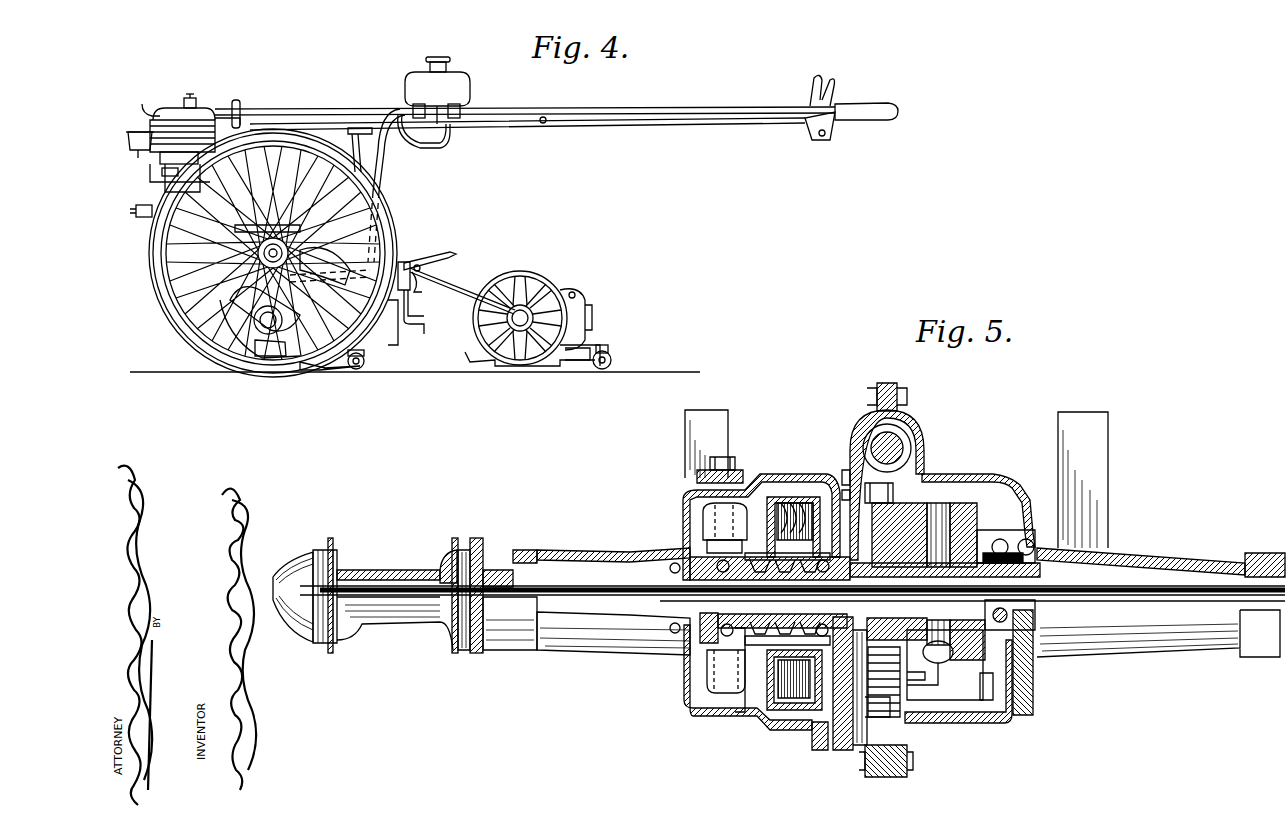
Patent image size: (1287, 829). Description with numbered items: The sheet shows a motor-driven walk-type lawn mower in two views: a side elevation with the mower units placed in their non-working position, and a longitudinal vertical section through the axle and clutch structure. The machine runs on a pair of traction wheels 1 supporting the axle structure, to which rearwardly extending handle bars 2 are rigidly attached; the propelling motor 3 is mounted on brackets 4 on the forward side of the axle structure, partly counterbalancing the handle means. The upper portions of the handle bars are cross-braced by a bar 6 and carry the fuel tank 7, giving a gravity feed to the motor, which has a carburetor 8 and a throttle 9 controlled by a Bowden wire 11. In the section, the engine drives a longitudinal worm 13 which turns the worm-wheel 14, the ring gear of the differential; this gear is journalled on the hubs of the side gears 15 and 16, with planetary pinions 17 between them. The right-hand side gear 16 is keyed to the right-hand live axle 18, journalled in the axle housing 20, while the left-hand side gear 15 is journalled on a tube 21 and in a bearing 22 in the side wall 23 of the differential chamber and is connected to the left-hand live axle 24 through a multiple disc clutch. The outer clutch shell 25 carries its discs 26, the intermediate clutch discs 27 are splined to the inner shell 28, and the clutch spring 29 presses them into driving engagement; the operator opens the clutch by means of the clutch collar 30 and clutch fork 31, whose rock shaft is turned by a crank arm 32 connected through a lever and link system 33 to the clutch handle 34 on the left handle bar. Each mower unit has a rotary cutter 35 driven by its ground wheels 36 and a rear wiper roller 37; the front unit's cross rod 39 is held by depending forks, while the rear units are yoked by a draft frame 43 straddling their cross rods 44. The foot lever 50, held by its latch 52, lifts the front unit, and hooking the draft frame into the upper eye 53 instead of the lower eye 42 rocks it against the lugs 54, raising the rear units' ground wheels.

In FIG. 4, the traction wheels 1 is at (390, 225).
In FIG. 4, the handle bars 2 is at (660, 106).
In FIG. 4, the propelling motor 3 is at (195, 117).
In FIG. 5, the brackets 4 is at (678, 410).
In FIG. 4, the cross-brace bar 6 is at (545, 116).
In FIG. 4, the fuel tank 7 is at (465, 84).
In FIG. 4, the carburetor 8 is at (131, 145).
In FIG. 4, the throttle 9 is at (146, 100).
In FIG. 4, the Bowden wire 11 is at (316, 106).
In FIG. 5, the worm 13 is at (876, 438).
In FIG. 5, the worm-wheel 14 is at (912, 505).
In FIG. 5, the left-hand side gear 15 is at (945, 508).
In FIG. 5, the right-hand side gear 16 is at (1003, 540).
In FIG. 5, the planetary pinions 17 is at (975, 530).
In FIG. 5, the right-hand live axle 18 is at (1125, 586).
In FIG. 5, the axle housing 20 is at (550, 550).
In FIG. 5, the tube 21 is at (818, 745).
In FIG. 5, the bearing 22 is at (797, 710).
In FIG. 5, the side wall 23 is at (818, 497).
In FIG. 5, the left-hand live axle 24 is at (585, 548).
In FIG. 5, the outer clutch shell 25 is at (800, 497).
In FIG. 5, the clutch discs 26 is at (715, 458).
In FIG. 5, the intermediate clutch discs 27 is at (762, 722).
In FIG. 5, the inner shell 28 is at (708, 660).
In FIG. 5, the clutch spring 29 is at (712, 636).
In FIG. 5, the clutch collar 30 is at (705, 620).
In FIG. 5, the clutch fork 31 is at (710, 525).
In FIG. 5, the crank arm 32 is at (700, 476).
In FIG. 4, the lever and link system 33 is at (462, 138).
In FIG. 4, the clutch handle 34 is at (830, 84).
In FIG. 4, the rotary cutter 35 is at (305, 378).
In FIG. 4, the ground wheels 36 is at (218, 318).
In FIG. 4, the wiper roller 37 is at (364, 364).
In FIG. 4, the cross rod 39 is at (255, 356).
In FIG. 4, the eye 42 is at (421, 322).
In FIG. 4, the draft frame 43 is at (470, 284).
In FIG. 4, the cross rod 44 is at (526, 296).
In FIG. 4, the foot lever 50 is at (448, 260).
In FIG. 4, the latch 52 is at (396, 330).
In FIG. 4, the upper eye 53 is at (422, 290).
In FIG. 4, the lugs 54 is at (548, 284).